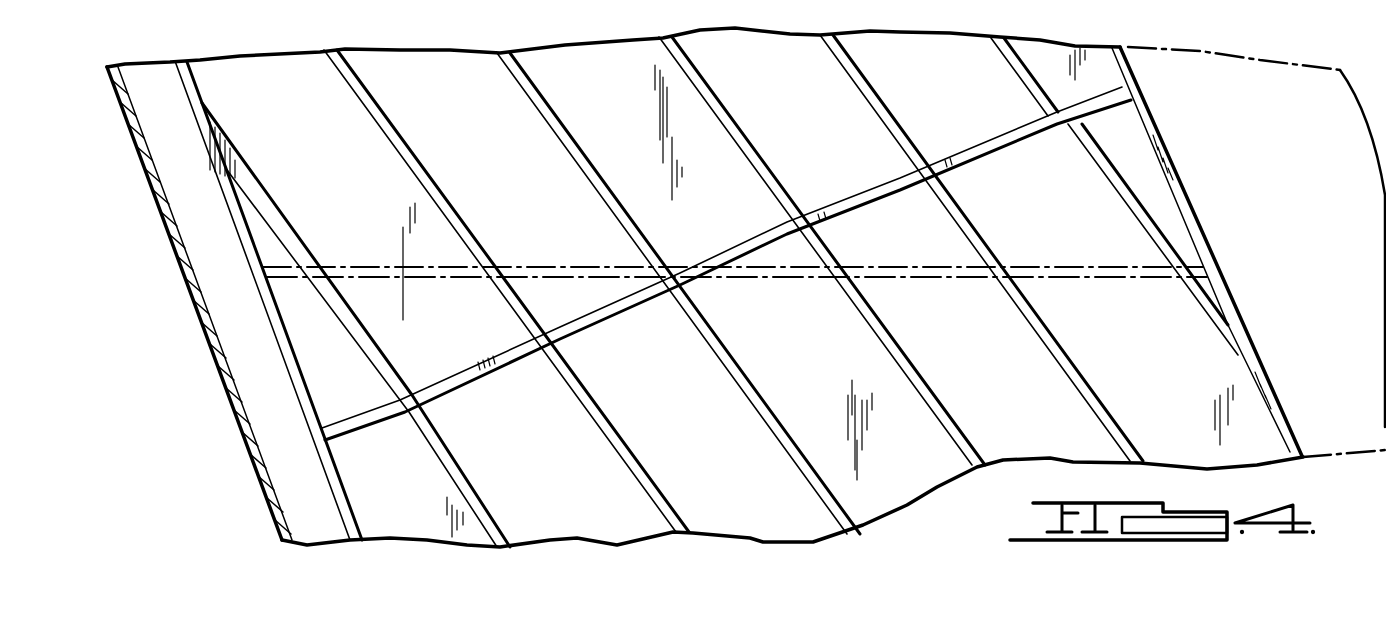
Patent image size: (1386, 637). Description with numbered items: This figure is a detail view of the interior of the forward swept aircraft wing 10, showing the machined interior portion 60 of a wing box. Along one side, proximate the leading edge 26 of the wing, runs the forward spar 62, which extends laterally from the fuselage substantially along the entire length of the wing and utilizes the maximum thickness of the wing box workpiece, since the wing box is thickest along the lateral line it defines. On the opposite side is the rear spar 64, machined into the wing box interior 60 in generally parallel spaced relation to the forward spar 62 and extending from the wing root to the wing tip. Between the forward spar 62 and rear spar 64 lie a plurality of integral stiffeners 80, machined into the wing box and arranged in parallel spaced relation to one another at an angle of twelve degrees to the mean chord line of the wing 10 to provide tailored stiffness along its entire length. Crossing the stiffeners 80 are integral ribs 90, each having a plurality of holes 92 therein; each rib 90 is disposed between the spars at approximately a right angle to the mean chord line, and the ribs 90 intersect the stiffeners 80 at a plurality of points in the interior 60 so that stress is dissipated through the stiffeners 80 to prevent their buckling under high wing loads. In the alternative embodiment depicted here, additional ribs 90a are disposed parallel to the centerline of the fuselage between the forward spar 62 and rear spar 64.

The forward swept aircraft wing 10 is at (1192, 415).
The leading edge 26 is at (207, 347).
The interior portion 60 is at (692, 415).
The forward spar 62 is at (283, 362).
The rear spar 64 is at (1267, 378).
The integral stiffeners 80 is at (590, 177).
The integral ribs 90 is at (370, 262).
The ribs 90a is at (1097, 275).
The holes 92 is at (812, 213).